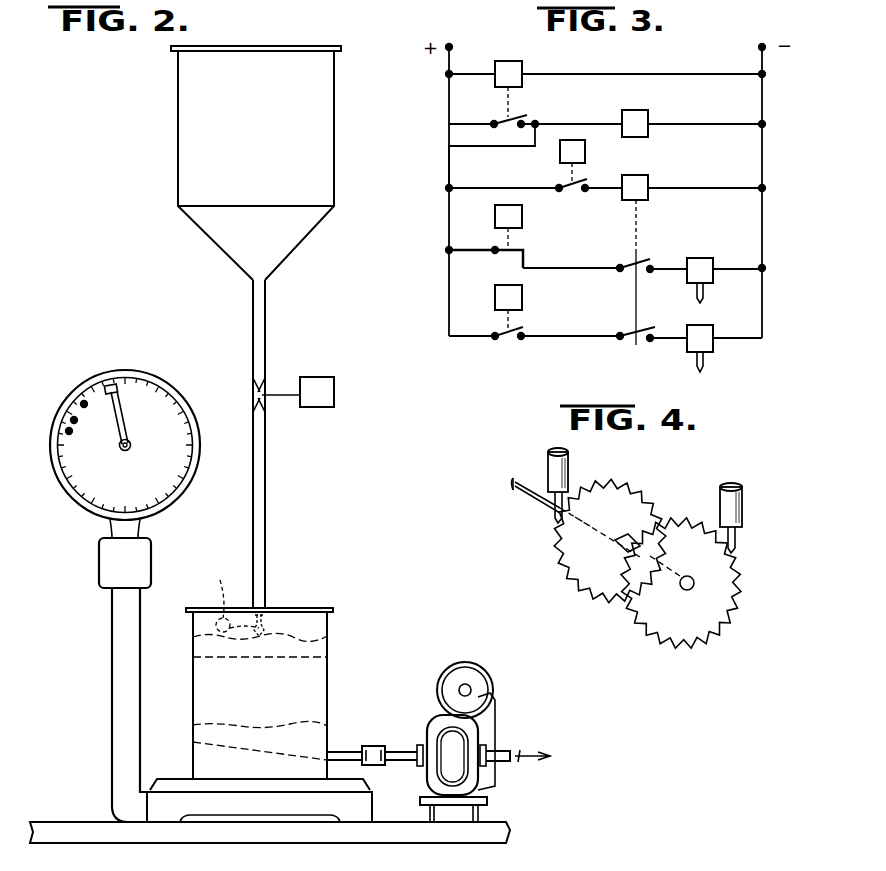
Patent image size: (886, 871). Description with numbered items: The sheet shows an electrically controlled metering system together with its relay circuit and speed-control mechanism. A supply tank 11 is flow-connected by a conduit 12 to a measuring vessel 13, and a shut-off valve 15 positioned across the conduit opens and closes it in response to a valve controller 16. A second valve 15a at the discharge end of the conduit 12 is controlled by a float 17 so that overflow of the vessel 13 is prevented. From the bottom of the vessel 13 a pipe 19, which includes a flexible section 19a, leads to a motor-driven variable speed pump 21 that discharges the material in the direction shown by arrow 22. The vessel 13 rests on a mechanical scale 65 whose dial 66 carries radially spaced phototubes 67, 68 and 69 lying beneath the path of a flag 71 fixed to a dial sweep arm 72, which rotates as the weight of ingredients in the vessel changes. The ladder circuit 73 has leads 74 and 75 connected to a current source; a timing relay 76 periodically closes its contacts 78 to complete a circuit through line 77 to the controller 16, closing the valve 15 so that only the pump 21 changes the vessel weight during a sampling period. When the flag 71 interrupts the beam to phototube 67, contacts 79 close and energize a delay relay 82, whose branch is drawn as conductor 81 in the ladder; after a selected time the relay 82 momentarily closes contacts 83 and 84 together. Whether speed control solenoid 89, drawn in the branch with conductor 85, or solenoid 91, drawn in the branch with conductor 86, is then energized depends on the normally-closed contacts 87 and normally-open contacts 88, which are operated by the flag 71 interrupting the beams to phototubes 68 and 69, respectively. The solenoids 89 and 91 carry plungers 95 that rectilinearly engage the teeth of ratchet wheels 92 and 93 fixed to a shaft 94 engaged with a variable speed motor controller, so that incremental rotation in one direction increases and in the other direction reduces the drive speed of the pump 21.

In FIG. 2, the supply tank 11 is at (186, 137).
In FIG. 2, the conduit 12 is at (253, 325).
In FIG. 2, the measuring vessel 13 is at (341, 680).
In FIG. 2, the shut-off valve 15 is at (256, 392).
In FIG. 2, the second valve 15a is at (262, 628).
In FIG. 2, the valve controller 16 is at (318, 405).
In FIG. 3, the valve controller 16 is at (636, 116).
In FIG. 2, the float 17 is at (217, 598).
In FIG. 2, the pipe 19 is at (398, 752).
In FIG. 2, the flexible section 19a is at (372, 766).
In FIG. 2, the variable speed pump 21 is at (435, 722).
In FIG. 2, the arrow 22 is at (524, 748).
In FIG. 2, the mechanical scale 65 is at (168, 776).
In FIG. 2, the dial 66 is at (84, 512).
In FIG. 2, the phototube 67 is at (83, 400).
In FIG. 3, the phototube 67 is at (580, 160).
In FIG. 2, the phototube 68 is at (72, 418).
In FIG. 3, the phototube 68 is at (516, 224).
In FIG. 2, the phototube 69 is at (66, 433).
In FIG. 3, the phototube 69 is at (516, 300).
In FIG. 2, the flag 71 is at (114, 384).
In FIG. 2, the dial sweep arm 72 is at (124, 424).
In FIG. 3, the ladder circuit 73 is at (773, 241).
In FIG. 3, the lead 74 is at (762, 176).
In FIG. 3, the lead 75 is at (447, 106).
In FIG. 3, the timing relay 76 is at (516, 70).
In FIG. 3, the line 77 is at (552, 124).
In FIG. 3, the contacts 78 is at (503, 118).
In FIG. 3, the contacts 79 is at (564, 182).
In FIG. 3, the conductor 81 is at (716, 186).
In FIG. 3, the delay relay 82 is at (644, 166).
In FIG. 3, the contacts 83 is at (630, 264).
In FIG. 3, the contacts 84 is at (634, 332).
In FIG. 3, the conductor 85 is at (730, 268).
In FIG. 3, the conductor 86 is at (730, 338).
In FIG. 3, the normally-closed contacts 87 is at (527, 259).
In FIG. 3, the normally-open contacts 88 is at (526, 331).
In FIG. 3, the speed control solenoid 89 is at (710, 246).
In FIG. 4, the speed control solenoid 89 is at (742, 500).
In FIG. 3, the speed control solenoid 91 is at (710, 316).
In FIG. 4, the speed control solenoid 91 is at (548, 462).
In FIG. 4, the ratchet wheel 92 is at (668, 618).
In FIG. 4, the ratchet wheel 93 is at (575, 585).
In FIG. 4, the shaft 94 is at (535, 505).
In FIG. 3, the plunger 95 is at (706, 290).
In FIG. 4, the plunger 95 is at (556, 515).